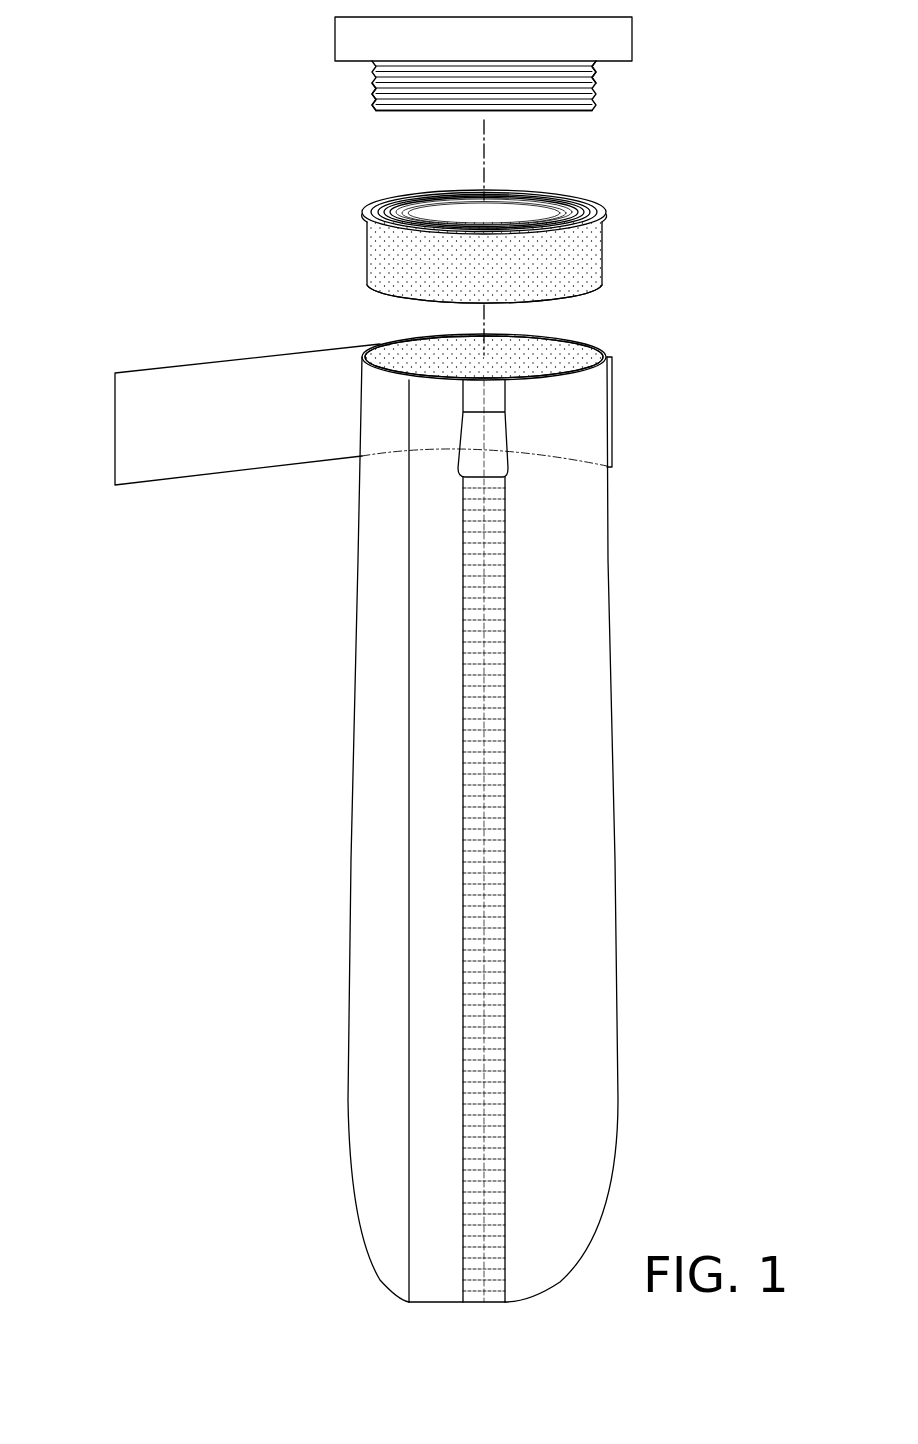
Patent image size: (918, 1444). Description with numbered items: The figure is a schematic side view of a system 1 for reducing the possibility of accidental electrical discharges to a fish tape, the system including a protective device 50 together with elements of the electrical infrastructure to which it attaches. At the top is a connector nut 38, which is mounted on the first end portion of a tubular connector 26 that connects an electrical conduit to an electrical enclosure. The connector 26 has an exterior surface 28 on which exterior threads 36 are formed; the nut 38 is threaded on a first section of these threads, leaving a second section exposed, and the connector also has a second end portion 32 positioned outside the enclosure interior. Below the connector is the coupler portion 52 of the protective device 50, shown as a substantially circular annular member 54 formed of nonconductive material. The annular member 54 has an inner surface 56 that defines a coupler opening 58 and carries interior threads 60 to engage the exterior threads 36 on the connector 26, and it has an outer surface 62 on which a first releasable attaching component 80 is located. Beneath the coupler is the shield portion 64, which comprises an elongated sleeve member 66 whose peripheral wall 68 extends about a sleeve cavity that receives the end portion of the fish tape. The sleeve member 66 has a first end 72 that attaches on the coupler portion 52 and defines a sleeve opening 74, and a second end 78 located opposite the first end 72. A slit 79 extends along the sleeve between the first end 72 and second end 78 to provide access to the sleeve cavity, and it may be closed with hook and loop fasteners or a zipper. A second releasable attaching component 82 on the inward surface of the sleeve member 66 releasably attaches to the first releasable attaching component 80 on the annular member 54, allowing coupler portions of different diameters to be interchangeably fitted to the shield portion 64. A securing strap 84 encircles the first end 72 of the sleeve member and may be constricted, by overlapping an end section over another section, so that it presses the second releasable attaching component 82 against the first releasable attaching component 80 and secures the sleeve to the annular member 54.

The system 1 is at (205, 128).
The connector 26 is at (383, 90).
The exterior surface 28 is at (583, 80).
The second end portion 32 is at (380, 107).
The exterior threads 36 is at (565, 100).
The connector nut 38 is at (613, 50).
The protective device 50 is at (387, 804).
The coupler portion 52 is at (513, 242).
The annular member 54 is at (603, 220).
The inner surface 56 is at (440, 207).
The coupler opening 58 is at (545, 205).
The interior threads 60 is at (512, 207).
The outer surface 62 is at (578, 288).
The shield portion 64 is at (483, 830).
The sleeve member 66 is at (608, 632).
The peripheral wall 68 is at (590, 912).
The first end 72 is at (527, 355).
The sleeve opening 74 is at (420, 353).
The second end 78 is at (350, 1267).
The slit 79 is at (505, 815).
The first releasable attaching component 80 is at (380, 242).
The second releasable attaching component 82 is at (507, 352).
The securing strap 84 is at (138, 435).